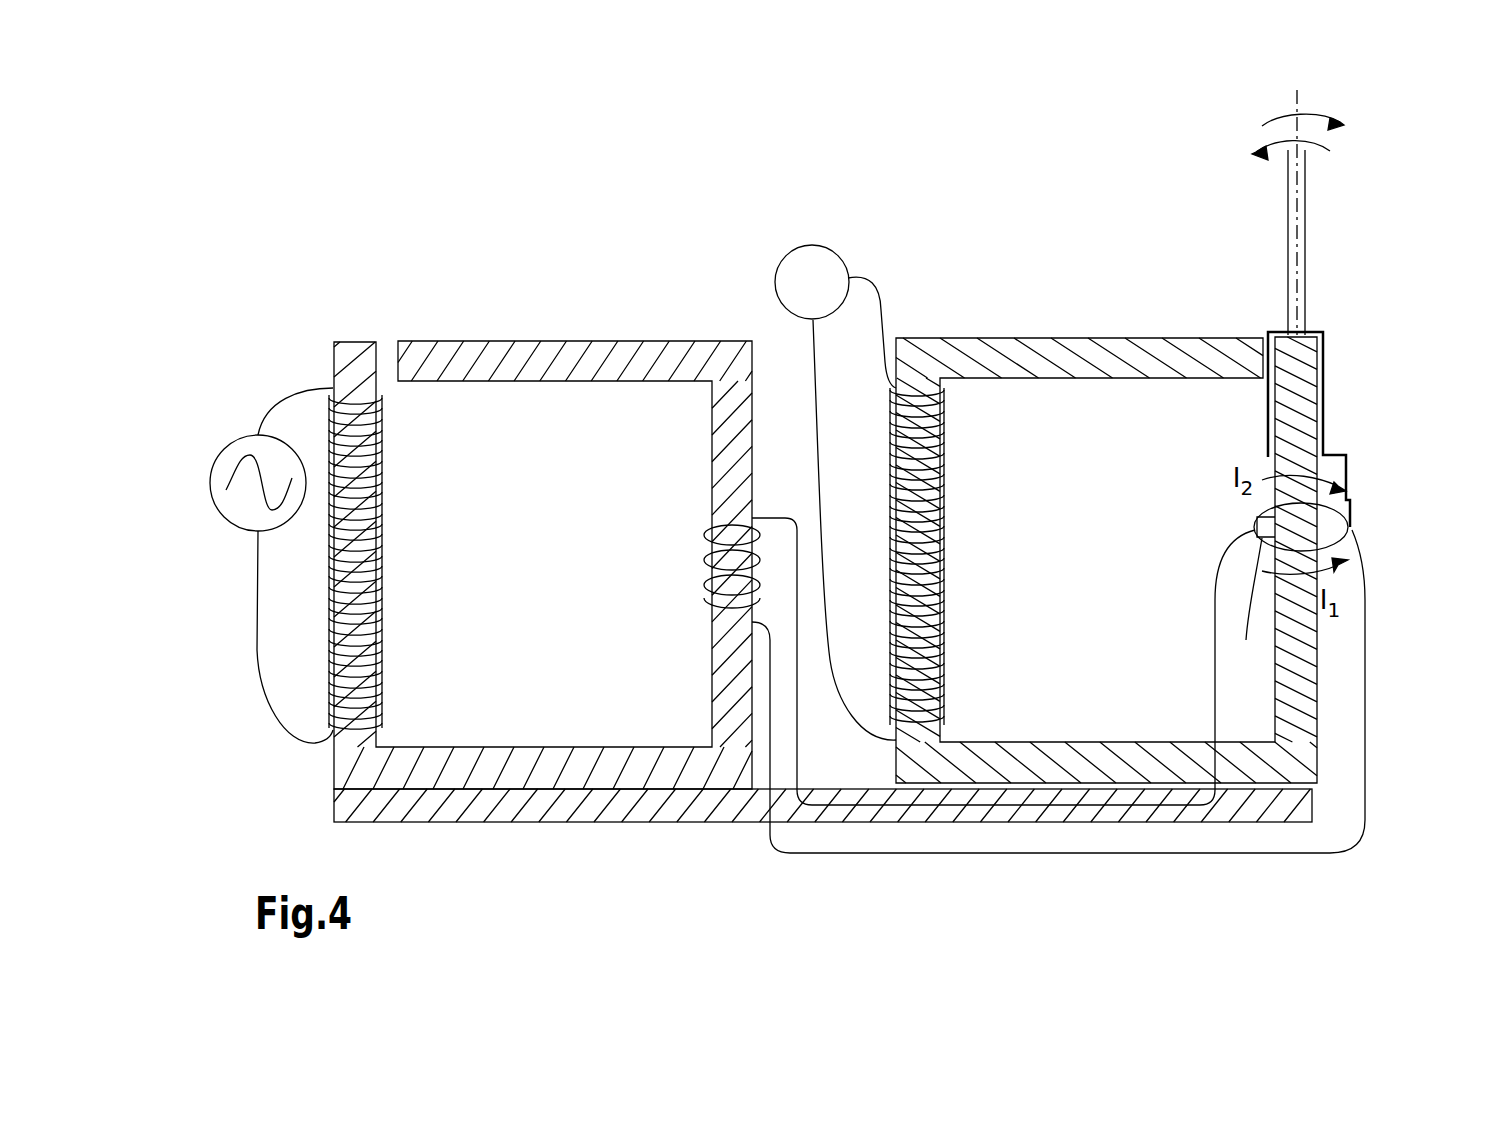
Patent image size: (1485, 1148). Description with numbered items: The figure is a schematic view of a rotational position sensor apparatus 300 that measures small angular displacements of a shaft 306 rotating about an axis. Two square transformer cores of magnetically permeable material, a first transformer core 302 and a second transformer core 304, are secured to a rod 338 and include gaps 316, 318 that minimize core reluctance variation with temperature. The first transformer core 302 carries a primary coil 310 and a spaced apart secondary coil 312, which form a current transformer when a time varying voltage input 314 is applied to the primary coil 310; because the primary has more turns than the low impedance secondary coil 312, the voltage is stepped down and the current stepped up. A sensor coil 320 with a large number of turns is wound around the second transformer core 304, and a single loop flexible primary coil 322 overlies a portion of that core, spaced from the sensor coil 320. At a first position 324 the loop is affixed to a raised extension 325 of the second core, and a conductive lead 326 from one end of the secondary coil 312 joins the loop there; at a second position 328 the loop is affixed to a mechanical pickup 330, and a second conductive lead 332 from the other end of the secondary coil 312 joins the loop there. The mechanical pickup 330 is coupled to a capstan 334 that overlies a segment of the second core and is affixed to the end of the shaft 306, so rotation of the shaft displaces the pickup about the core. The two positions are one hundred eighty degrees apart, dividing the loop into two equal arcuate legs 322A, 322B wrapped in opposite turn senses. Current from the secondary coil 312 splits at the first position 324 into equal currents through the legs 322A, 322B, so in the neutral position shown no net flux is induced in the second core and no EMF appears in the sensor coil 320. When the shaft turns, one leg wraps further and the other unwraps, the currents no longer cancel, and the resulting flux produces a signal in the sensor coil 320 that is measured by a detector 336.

The sensor apparatus 300 is at (737, 205).
The first transformer core 302 is at (575, 362).
The second transformer core 304 is at (1085, 345).
The shaft 306 is at (1307, 200).
The primary coil 310 is at (378, 495).
The secondary coil 312 is at (708, 600).
The voltage input 314 is at (240, 446).
The gap 316 is at (388, 348).
The gap 318 is at (1270, 345).
The sensor coil 320 is at (1058, 455).
The single loop flexible primary coil 322 is at (1355, 565).
The arcuate leg 322A is at (1345, 548).
The arcuate leg 322B is at (1258, 524).
The first position 324 is at (1257, 530).
The raised extension 325 is at (1245, 605).
The conductive lead 326 is at (1172, 806).
The second position 328 is at (1350, 527).
The mechanical pickup 330 is at (1350, 473).
The second conductive lead 332 is at (1096, 856).
The capstan 334 is at (1325, 350).
The detector 336 is at (845, 262).
The rod 338 is at (585, 806).